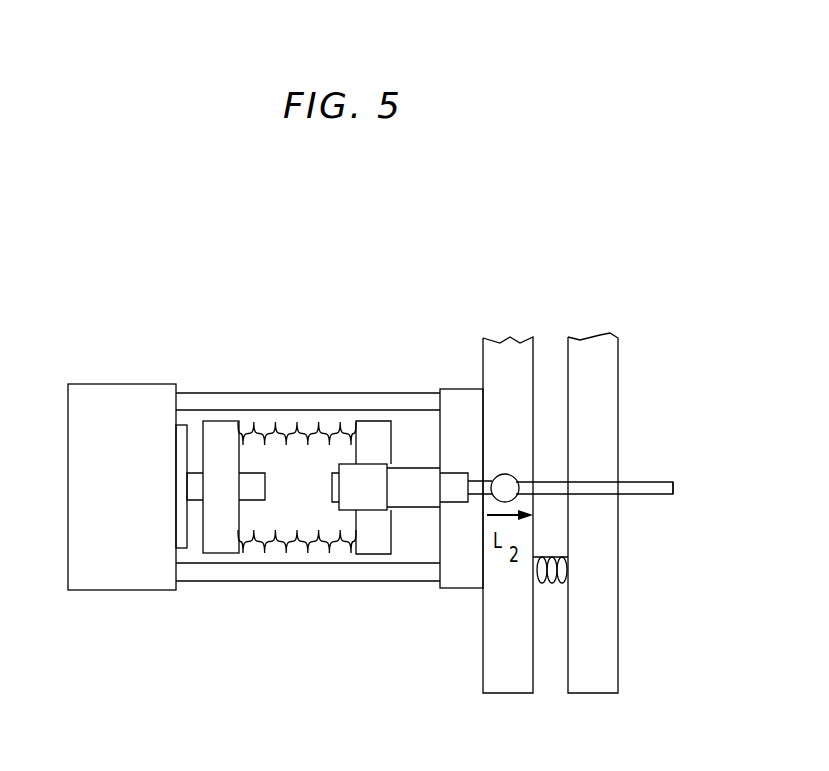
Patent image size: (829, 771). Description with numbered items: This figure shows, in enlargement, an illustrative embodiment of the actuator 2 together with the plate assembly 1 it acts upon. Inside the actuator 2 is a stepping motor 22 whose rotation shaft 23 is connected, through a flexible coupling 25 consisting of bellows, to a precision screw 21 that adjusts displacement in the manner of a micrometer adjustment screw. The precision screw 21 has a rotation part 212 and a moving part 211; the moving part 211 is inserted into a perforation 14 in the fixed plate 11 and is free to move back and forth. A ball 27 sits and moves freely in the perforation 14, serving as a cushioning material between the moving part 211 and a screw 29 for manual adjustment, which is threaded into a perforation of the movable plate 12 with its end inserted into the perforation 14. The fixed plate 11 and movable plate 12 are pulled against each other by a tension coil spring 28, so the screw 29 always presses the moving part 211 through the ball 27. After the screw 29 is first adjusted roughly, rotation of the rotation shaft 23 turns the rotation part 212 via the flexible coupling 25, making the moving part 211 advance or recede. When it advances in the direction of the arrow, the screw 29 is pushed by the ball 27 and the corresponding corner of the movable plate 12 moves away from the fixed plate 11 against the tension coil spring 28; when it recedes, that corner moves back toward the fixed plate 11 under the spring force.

The electrode assembly 1 is at (495, 262).
The fixed plate 11 is at (493, 338).
The movable plate 12 is at (586, 335).
The perforation 14 is at (537, 475).
The actuator 2 is at (252, 368).
The precision screw 21 is at (420, 502).
The moving part 211 is at (475, 490).
The rotation part 212 is at (365, 477).
The stepping motor 22 is at (127, 384).
The rotation shaft 23 is at (220, 490).
The flexible coupling 25 is at (313, 543).
The ball 27 is at (500, 478).
The tension coil spring 28 is at (552, 583).
The screw 29 is at (643, 497).